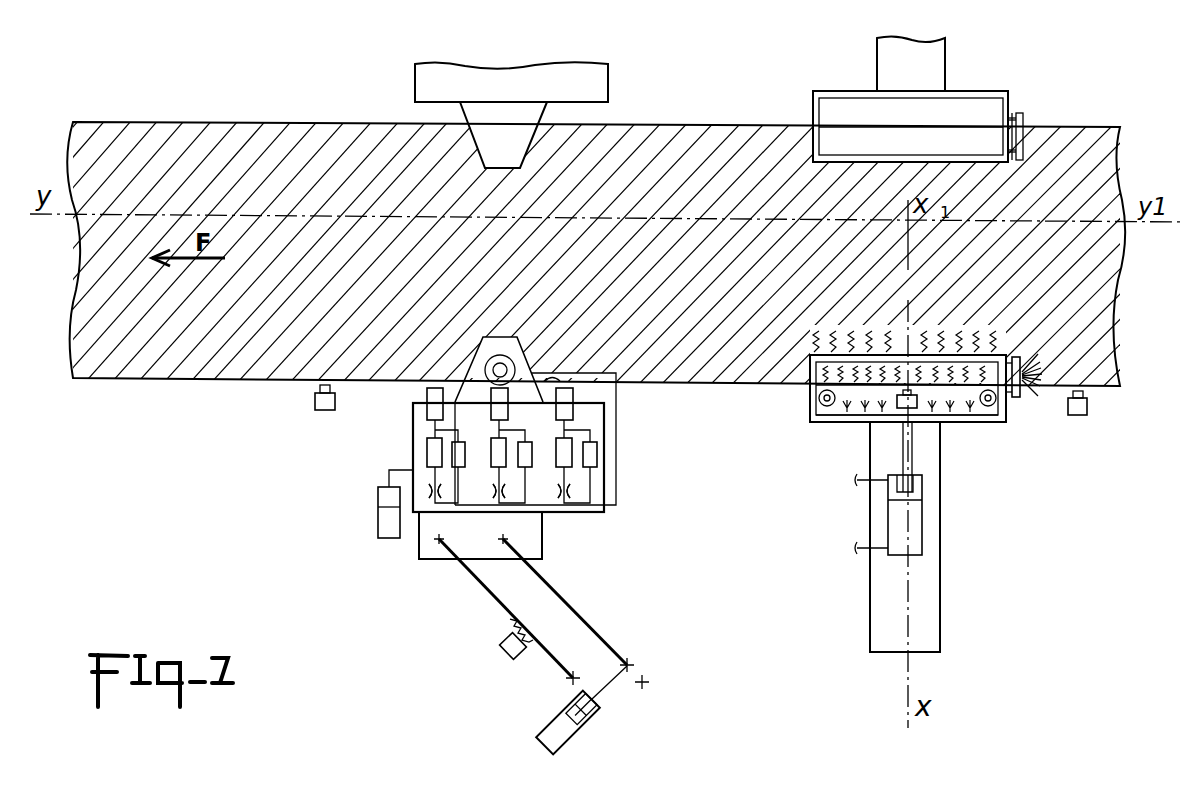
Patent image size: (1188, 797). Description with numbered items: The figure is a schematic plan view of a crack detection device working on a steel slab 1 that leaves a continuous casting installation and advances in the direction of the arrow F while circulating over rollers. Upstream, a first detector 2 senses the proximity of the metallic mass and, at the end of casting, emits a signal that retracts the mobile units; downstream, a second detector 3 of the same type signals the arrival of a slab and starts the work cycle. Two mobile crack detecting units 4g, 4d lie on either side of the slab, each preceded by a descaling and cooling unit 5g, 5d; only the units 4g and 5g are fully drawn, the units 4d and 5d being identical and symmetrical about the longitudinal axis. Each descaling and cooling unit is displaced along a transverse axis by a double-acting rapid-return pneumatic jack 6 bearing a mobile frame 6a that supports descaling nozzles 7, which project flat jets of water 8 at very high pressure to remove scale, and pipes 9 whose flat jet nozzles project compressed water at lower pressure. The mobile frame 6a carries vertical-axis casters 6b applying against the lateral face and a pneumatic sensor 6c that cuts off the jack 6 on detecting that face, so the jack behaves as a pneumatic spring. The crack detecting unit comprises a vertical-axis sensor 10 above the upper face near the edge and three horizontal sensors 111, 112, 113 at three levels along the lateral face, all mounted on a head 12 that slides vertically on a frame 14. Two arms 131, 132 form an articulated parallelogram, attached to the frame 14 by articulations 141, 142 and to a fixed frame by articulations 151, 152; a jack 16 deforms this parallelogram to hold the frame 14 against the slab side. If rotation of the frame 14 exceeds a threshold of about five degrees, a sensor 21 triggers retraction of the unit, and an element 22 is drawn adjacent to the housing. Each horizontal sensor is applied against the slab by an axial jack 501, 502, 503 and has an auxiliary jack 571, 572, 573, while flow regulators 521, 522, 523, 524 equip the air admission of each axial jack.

The steel slab 1 is at (228, 140).
The first detector 2 is at (1090, 405).
The second detector 3 is at (313, 402).
The mobile crack detecting unit 4d is at (410, 86).
The mobile crack detecting unit 4g is at (408, 432).
The descaling and cooling unit 5d is at (968, 88).
The descaling and cooling unit 5g is at (990, 429).
The pneumatic jack 6 is at (898, 522).
The mobile frame 6a is at (818, 398).
The vertical-axis casters 6b is at (827, 406).
The pneumatic sensor 6c is at (915, 408).
The descaling nozzles 7 is at (1020, 400).
The jets of water 8 is at (1032, 368).
The pipes 9 is at (853, 417).
The vertical-axis sensor 10 is at (492, 368).
The horizontal sensor 111 is at (570, 415).
The horizontal sensor 112 is at (503, 417).
The horizontal sensor 113 is at (427, 400).
The head 12 is at (593, 410).
The arm 131 is at (580, 615).
The arm 132 is at (487, 593).
The frame 14 is at (525, 557).
The articulation 141 is at (532, 553).
The articulation 142 is at (423, 567).
The articulation 151 is at (644, 682).
The articulation 152 is at (572, 678).
The jack 16 is at (558, 733).
The sensor 21 is at (505, 648).
The control unit 22 is at (378, 522).
The axial jack 501 is at (572, 450).
The axial jack 502 is at (506, 452).
The axial jack 503 is at (427, 450).
The flow regulator 521 is at (553, 492).
The flow regulator 522 is at (492, 490).
The flow regulator 523 is at (428, 488).
The flow regulator 524 is at (553, 376).
The auxiliary jack 571 is at (590, 462).
The auxiliary jack 572 is at (530, 458).
The auxiliary jack 573 is at (452, 455).